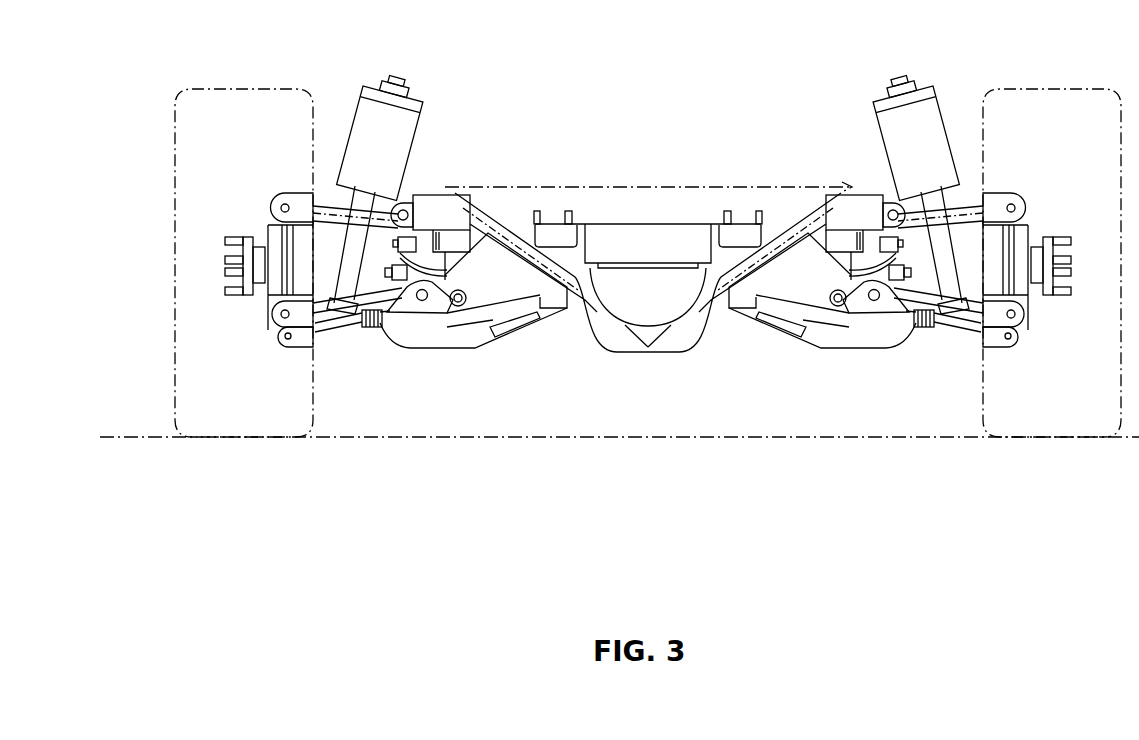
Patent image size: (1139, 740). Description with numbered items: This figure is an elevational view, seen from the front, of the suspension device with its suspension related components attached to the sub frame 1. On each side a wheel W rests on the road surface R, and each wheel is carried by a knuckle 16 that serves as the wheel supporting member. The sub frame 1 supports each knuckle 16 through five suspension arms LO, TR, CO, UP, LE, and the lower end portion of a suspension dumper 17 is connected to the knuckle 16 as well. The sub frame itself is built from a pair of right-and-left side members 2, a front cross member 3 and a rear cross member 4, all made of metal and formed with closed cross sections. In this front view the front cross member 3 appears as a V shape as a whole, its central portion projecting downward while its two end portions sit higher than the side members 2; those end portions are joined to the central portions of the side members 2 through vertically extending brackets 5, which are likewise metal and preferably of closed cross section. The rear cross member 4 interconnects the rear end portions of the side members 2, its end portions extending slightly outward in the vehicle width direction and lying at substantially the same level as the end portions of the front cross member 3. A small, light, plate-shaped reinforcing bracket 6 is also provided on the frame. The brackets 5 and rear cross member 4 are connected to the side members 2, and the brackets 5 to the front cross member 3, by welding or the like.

The sub frame 1 is at (726, 112).
The side members 2 is at (853, 340).
The front cross member 3 is at (607, 333).
The rear cross member 4 is at (630, 237).
The brackets 5 is at (788, 287).
The plate-shaped reinforcing bracket 6 is at (818, 323).
The knuckle 16 is at (1033, 303).
The suspension dumper 17 is at (932, 110).
The wheel W is at (1078, 90).
The road surface R is at (132, 435).
The suspension arm UP is at (980, 200).
The suspension arm LE is at (962, 227).
The suspension arm LO is at (958, 333).
The suspension arm TR is at (953, 320).
The suspension arm CO is at (913, 293).